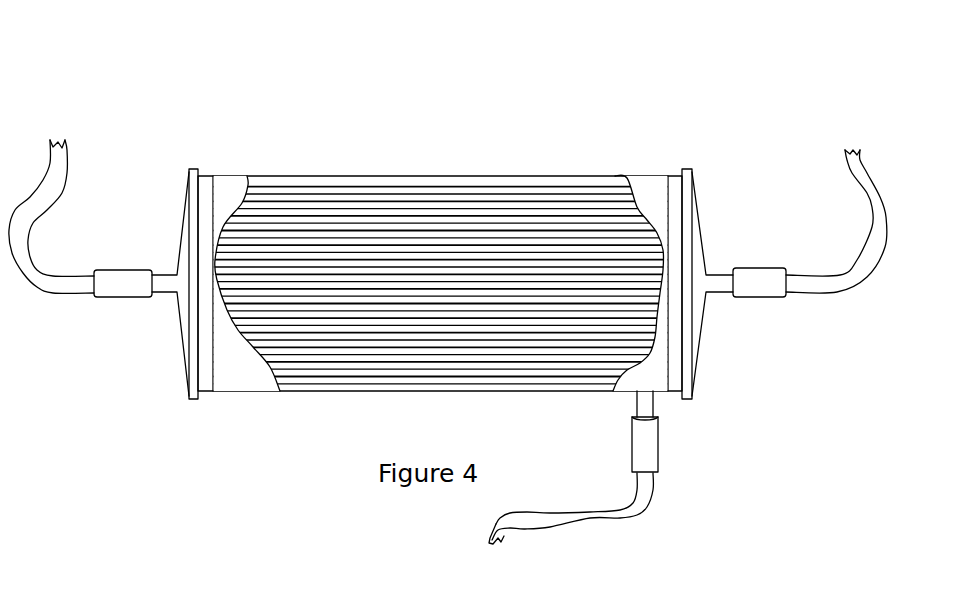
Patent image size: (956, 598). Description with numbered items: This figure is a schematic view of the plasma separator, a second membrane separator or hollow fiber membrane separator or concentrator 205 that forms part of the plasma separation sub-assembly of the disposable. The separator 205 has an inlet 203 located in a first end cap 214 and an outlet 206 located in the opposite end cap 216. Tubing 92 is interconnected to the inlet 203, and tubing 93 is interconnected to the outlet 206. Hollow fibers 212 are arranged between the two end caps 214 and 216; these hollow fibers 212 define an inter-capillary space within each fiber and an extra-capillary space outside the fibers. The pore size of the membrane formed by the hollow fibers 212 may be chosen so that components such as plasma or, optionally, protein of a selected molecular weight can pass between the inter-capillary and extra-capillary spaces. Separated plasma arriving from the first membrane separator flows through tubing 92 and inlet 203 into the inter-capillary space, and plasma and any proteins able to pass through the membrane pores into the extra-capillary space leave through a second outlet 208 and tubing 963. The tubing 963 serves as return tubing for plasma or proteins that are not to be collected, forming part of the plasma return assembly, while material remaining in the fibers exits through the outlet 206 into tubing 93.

The hollow fiber membrane separator 205 is at (203, 119).
The tubing 92 is at (65, 180).
The tubing 93 is at (853, 182).
The inlet 203 is at (123, 270).
The outlet 206 is at (758, 268).
The second outlet 208 is at (657, 443).
The hollow fibers 212 is at (365, 362).
The first end cap 214 is at (182, 347).
The end cap 216 is at (700, 345).
The tubing 963 is at (588, 530).